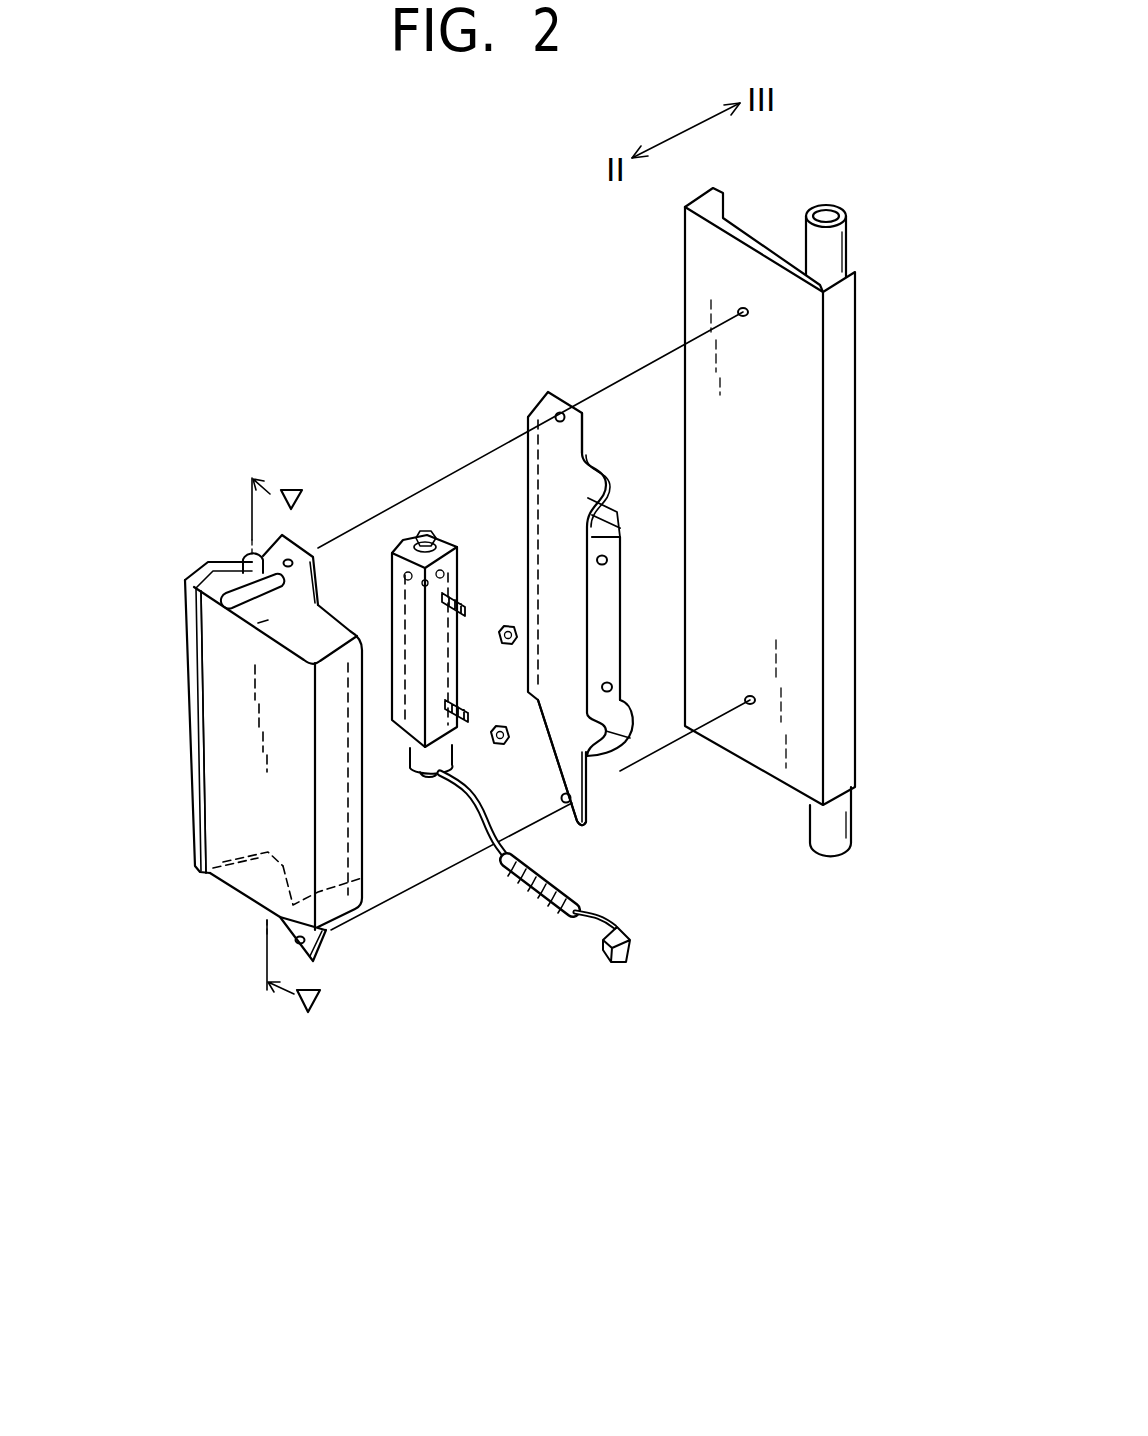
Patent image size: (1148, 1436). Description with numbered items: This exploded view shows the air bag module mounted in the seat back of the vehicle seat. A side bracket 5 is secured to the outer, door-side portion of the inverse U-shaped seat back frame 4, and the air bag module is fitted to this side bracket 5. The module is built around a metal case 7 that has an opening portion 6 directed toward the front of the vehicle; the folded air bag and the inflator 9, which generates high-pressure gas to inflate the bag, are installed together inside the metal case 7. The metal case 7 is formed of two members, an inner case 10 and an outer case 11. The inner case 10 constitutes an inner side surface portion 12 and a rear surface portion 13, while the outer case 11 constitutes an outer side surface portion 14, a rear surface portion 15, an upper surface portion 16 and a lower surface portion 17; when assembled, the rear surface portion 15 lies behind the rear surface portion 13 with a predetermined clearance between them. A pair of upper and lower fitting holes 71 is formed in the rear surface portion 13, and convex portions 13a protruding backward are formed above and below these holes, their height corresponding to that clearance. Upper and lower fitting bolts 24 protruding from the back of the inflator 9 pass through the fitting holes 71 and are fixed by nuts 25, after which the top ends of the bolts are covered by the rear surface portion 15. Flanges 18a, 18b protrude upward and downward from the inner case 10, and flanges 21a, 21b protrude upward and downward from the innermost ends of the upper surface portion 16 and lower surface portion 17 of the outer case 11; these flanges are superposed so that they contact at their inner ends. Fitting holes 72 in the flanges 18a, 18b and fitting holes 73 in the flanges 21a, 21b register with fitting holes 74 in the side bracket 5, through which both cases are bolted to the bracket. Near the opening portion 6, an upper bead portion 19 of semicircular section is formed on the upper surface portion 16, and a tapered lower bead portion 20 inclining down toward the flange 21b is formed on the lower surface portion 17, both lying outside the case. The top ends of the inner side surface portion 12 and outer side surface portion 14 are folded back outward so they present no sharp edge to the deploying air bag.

The seat back frame 4 is at (845, 204).
The side bracket 5 is at (813, 496).
The opening portion 6 is at (213, 697).
The metal case 7 is at (552, 1150).
The inflator 9 is at (404, 540).
The inner case 10 is at (590, 714).
The outer case 11 is at (250, 754).
The inner side surface portion 12 is at (574, 619).
The rear surface portion 13 is at (662, 645).
The convex portions 13a is at (623, 512).
The outer side surface portion 14 is at (223, 752).
The rear surface portion 15 is at (338, 810).
The upper surface portion 16 is at (267, 623).
The lower surface portion 17 is at (237, 875).
The upper flange 18a is at (588, 423).
The lower flange 18b is at (593, 807).
The upper bead portion 19 is at (253, 587).
The lower bead portion 20 is at (277, 932).
The upper flange 21a is at (258, 548).
The lower flange 21b is at (298, 952).
The fitting bolts 24 is at (447, 706).
The nuts 25 is at (498, 722).
The fitting holes 71 is at (606, 559).
The fitting holes 72 is at (553, 392).
The fitting holes 73 is at (294, 559).
The fitting holes 74 is at (750, 311).